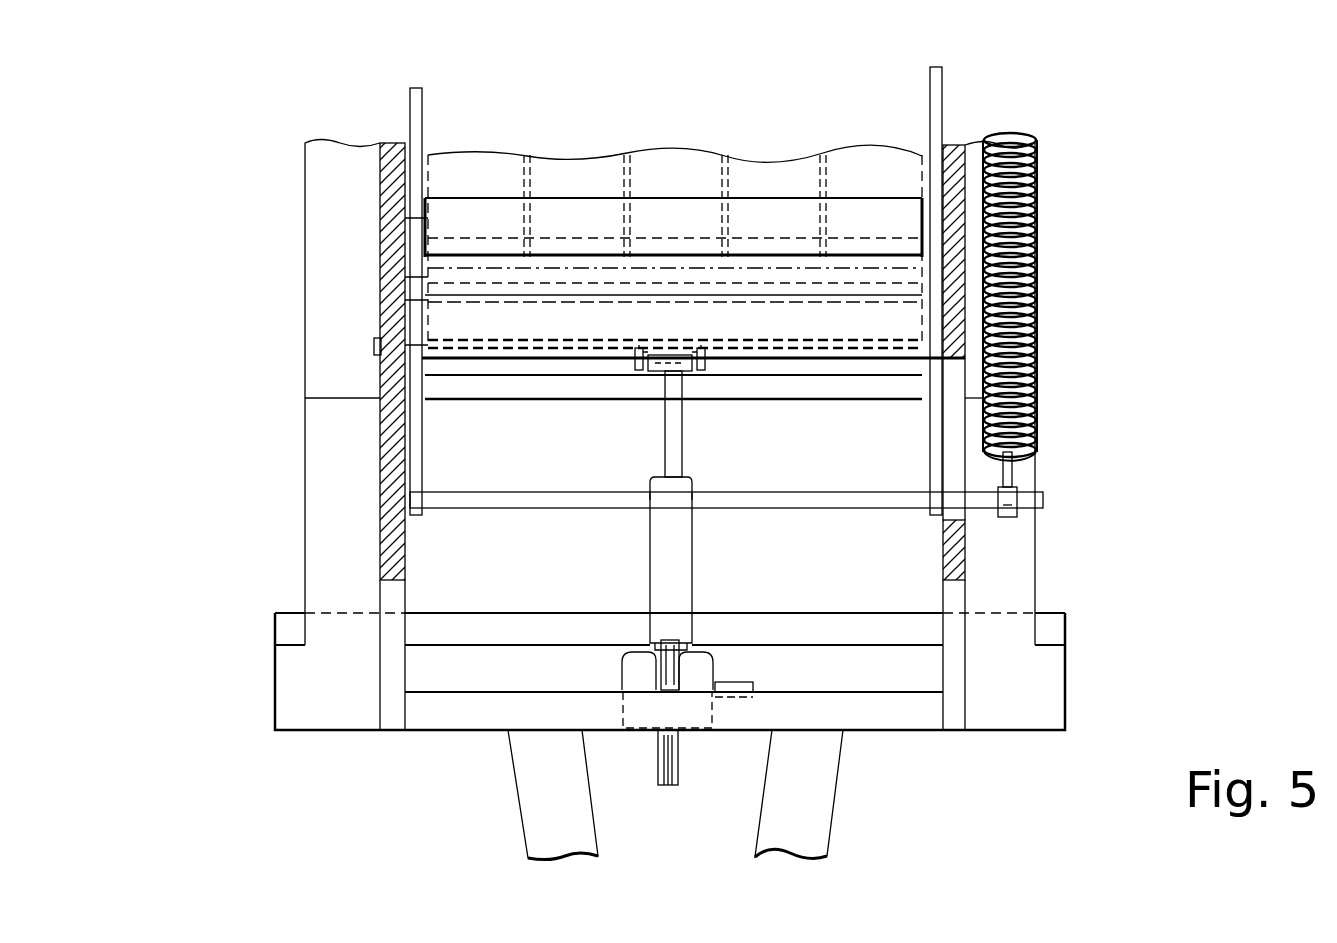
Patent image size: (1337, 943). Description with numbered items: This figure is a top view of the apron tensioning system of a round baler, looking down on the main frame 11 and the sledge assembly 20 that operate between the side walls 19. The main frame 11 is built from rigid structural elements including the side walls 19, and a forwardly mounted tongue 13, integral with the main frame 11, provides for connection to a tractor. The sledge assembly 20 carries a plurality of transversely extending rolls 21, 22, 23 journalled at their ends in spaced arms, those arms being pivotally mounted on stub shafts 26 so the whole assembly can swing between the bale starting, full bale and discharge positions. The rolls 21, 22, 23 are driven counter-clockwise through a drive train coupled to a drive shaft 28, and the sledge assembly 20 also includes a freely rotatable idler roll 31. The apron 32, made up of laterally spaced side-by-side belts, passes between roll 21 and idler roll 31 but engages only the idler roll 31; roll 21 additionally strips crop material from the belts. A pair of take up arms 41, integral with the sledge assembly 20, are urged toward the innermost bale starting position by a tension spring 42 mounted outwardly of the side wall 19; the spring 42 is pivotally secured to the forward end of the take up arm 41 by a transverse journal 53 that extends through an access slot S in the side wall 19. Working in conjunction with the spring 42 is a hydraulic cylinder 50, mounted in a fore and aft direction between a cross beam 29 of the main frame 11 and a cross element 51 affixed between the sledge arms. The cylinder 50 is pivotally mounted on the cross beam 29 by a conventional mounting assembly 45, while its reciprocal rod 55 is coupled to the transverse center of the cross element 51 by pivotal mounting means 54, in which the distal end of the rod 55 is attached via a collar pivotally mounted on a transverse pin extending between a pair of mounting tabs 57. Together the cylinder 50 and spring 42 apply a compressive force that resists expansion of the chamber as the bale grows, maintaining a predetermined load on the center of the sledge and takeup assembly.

The main frame 11 is at (305, 242).
The tongue 13 is at (530, 835).
The side walls 19 is at (405, 598).
The sledge assembly 20 is at (745, 417).
The roll 21 is at (708, 280).
The roll 22 is at (533, 375).
The roll 23 is at (492, 400).
The stub shafts 26 is at (375, 343).
The drive shaft 28 is at (683, 772).
The cross beam 29 is at (464, 716).
The idler roll 31 is at (660, 220).
The apron 32 is at (673, 214).
The take up arms 41 is at (422, 118).
The tension spring 42 is at (1037, 302).
The mounting assembly 45 is at (630, 677).
The hydraulic cylinder 50 is at (698, 567).
The cross element 51 is at (811, 336).
The journal 53 is at (1017, 492).
The pivotal mounting means 54 is at (650, 392).
The reciprocal rod 55 is at (672, 436).
The mounting tabs 57 is at (640, 366).
The access slot S is at (953, 462).